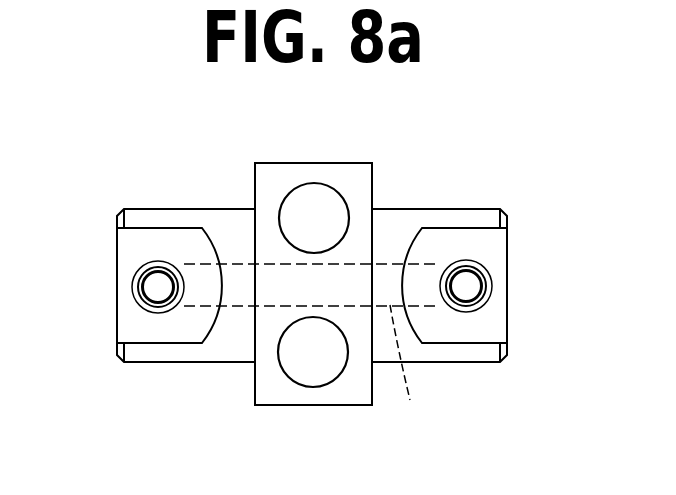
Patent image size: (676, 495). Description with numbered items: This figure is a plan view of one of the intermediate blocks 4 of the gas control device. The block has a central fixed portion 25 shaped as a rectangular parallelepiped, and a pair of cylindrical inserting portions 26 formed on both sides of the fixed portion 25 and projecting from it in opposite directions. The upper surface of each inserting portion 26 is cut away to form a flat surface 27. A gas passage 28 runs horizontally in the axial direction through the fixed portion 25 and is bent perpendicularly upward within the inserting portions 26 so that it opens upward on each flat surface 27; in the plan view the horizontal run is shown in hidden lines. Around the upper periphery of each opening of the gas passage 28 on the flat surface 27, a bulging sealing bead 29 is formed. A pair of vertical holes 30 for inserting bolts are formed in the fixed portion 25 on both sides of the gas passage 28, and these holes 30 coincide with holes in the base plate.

The intermediate block 4 is at (440, 171).
The fixed portion 25 is at (347, 164).
The inserting portion 26 is at (180, 204).
The flat surface 27 is at (165, 335).
The gas passage 28 is at (414, 369).
The sealing bead 29 is at (135, 291).
The vertical hole 30 is at (300, 189).